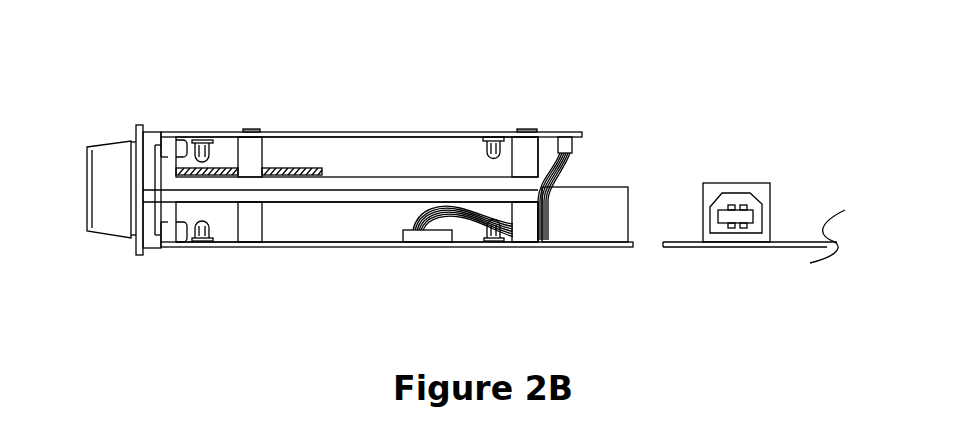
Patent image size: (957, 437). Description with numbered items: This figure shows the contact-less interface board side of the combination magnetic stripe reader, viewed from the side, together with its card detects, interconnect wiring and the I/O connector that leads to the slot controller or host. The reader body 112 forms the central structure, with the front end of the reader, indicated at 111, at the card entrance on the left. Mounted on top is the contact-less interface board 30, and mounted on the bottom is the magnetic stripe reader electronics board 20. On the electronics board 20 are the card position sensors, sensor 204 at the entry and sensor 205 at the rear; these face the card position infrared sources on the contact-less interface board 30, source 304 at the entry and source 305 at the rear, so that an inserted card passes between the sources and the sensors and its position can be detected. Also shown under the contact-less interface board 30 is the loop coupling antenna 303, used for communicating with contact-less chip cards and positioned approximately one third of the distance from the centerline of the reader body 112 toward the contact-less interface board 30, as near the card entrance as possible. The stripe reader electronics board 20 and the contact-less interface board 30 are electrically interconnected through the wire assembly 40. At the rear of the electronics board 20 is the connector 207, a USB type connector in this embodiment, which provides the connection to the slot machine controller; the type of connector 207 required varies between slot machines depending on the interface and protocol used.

The magnetic stripe reader electronics board 20 is at (306, 260).
The contact-less interface board 30 is at (427, 122).
The wire assembly 40 is at (567, 172).
The front connector 111 is at (118, 168).
The reader body 112 is at (166, 205).
The card position sensor 204 is at (201, 238).
The card position sensor 205 is at (496, 237).
The connector 207 is at (587, 208).
The loop-coupling antenna 303 is at (316, 165).
The card position infrared source 304 is at (202, 154).
The card position infrared source 305 is at (494, 146).